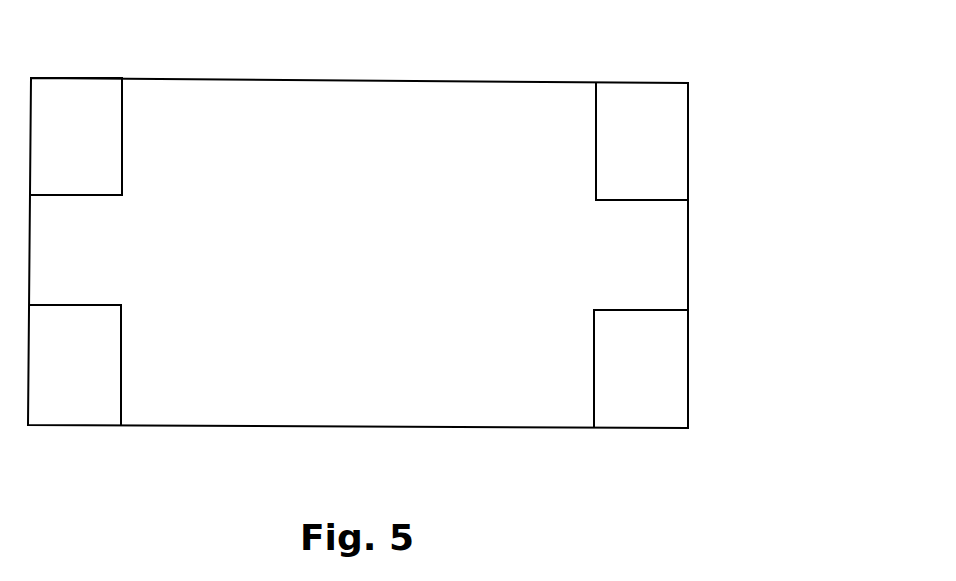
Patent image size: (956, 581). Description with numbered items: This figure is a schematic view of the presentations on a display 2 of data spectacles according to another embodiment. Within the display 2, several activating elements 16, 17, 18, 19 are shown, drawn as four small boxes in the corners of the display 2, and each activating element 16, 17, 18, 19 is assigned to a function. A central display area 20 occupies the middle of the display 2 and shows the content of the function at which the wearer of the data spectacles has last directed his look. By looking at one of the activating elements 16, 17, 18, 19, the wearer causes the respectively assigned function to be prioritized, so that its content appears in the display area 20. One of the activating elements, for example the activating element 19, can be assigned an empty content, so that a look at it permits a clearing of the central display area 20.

The display 2 is at (690, 132).
The activating element 16 is at (76, 136).
The activating element 17 is at (75, 365).
The activating element 18 is at (641, 369).
The activating element 19 is at (642, 141).
The display area 20 is at (370, 245).